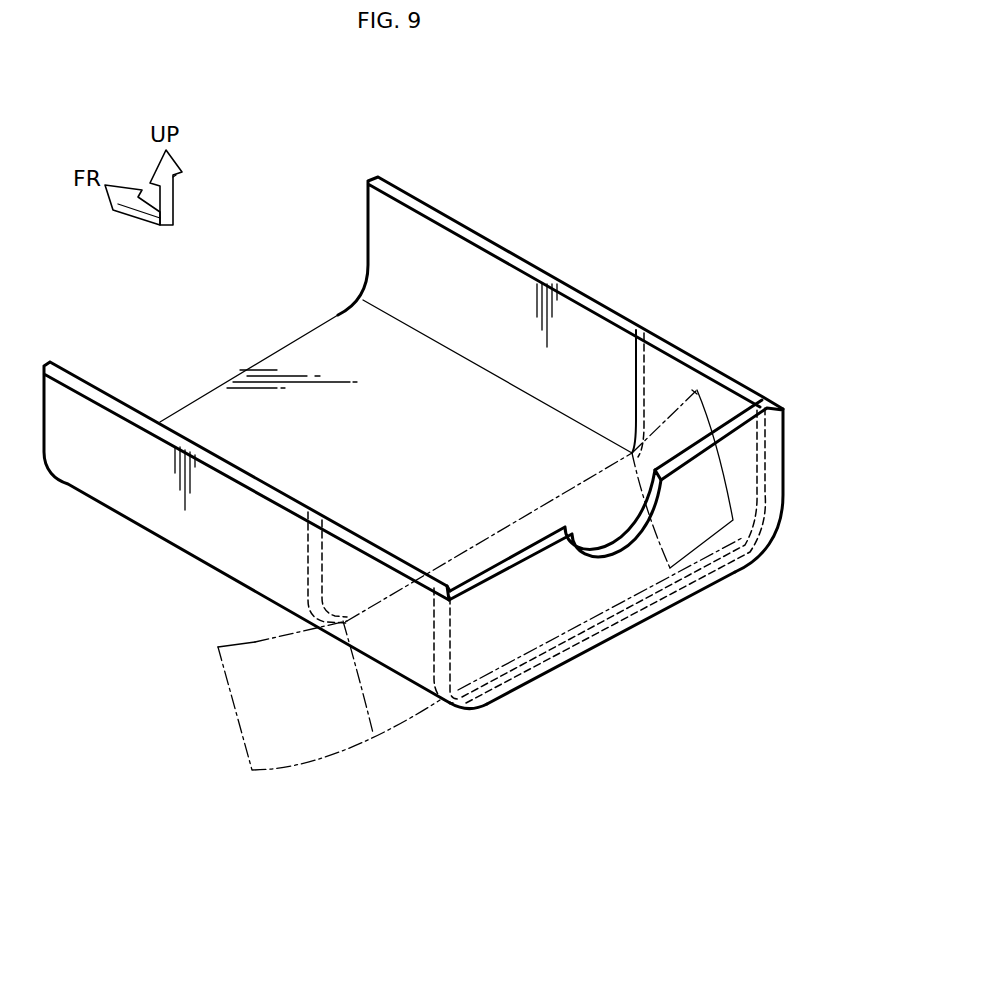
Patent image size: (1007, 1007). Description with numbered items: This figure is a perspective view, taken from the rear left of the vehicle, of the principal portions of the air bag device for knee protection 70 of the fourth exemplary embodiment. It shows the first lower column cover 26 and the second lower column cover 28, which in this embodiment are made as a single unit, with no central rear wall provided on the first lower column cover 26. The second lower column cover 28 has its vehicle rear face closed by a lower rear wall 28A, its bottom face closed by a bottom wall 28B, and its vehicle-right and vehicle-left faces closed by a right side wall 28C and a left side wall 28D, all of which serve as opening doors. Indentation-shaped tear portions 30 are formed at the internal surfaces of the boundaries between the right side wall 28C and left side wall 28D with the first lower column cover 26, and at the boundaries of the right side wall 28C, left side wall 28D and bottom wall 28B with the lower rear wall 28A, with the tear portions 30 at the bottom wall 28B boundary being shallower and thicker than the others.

The air bag device for knee protection 70 is at (577, 168).
The first lower column cover 26 is at (518, 255).
The second lower column cover 28 is at (692, 352).
The lower rear wall 28A is at (512, 632).
The bottom wall 28B is at (522, 537).
The right side wall 28C is at (715, 366).
The left side wall 28D is at (377, 545).
The tear portions 30 is at (632, 346).